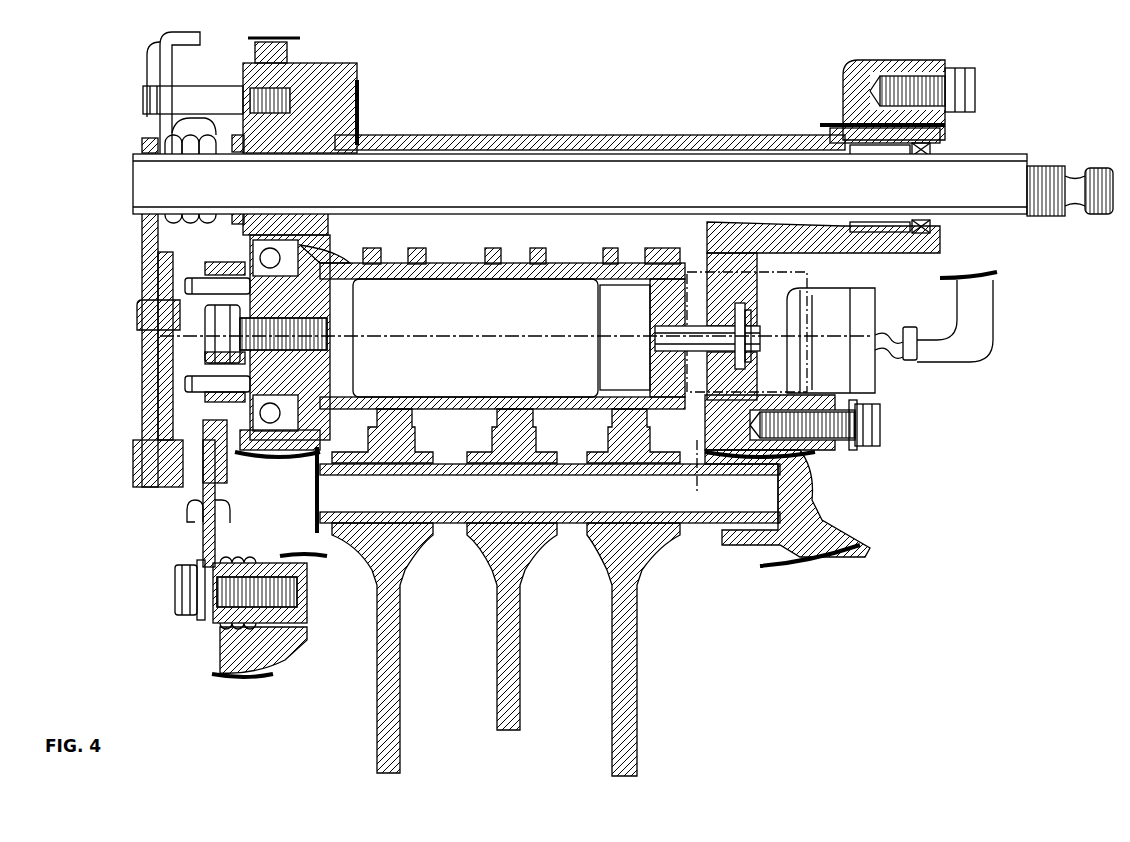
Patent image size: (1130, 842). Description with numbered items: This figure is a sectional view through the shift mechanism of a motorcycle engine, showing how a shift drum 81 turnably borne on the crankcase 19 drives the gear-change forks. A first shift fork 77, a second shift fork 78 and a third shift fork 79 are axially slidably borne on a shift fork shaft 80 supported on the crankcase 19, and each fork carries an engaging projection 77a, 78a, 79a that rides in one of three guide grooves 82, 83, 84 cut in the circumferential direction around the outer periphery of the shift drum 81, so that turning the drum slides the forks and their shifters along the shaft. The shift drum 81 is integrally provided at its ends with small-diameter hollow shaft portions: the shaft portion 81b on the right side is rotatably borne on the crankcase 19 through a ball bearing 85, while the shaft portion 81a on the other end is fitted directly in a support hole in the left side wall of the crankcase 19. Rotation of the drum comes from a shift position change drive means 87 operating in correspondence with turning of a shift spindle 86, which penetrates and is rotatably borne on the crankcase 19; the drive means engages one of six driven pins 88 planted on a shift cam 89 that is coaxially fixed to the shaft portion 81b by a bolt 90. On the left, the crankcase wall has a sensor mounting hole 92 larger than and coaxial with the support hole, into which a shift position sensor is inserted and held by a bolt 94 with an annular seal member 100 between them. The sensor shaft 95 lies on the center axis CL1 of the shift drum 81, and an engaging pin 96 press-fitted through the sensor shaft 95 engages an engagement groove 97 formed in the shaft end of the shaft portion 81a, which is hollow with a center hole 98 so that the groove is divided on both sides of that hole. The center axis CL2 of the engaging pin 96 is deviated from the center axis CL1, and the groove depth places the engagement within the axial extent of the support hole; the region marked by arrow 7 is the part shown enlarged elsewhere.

The arrow 7 is at (703, 265).
The crankcase 19 is at (362, 115).
The first shift fork 77 is at (520, 643).
The engaging projection 77a is at (510, 409).
The second shift fork 78 is at (637, 642).
The engaging projection 78a is at (620, 411).
The third shift fork 79 is at (395, 643).
The engaging projection 79a is at (393, 408).
The shift fork shaft 80 is at (448, 463).
The shift drum 81 is at (455, 266).
The shaft portion 81a is at (663, 380).
The shaft portion 81b is at (290, 292).
The guide groove 82 is at (532, 262).
The guide groove 83 is at (650, 262).
The guide groove 84 is at (405, 263).
The ball bearing 85 is at (262, 257).
The shift spindle 86 is at (572, 152).
The shift position change drive means 87 is at (137, 141).
The driven pin 88 is at (195, 286).
The shift cam 89 is at (205, 268).
The bolt 90 is at (220, 321).
The sensor mounting hole 92 is at (870, 292).
The bolt 94 is at (868, 428).
The sensor shaft 95 is at (665, 340).
The engaging pin 96 is at (742, 305).
The engagement groove 97 is at (830, 372).
The center hole 98 is at (735, 326).
The annular seal member 100 is at (793, 300).
The center axis CL1 is at (835, 338).
The center axis CL2 is at (694, 472).